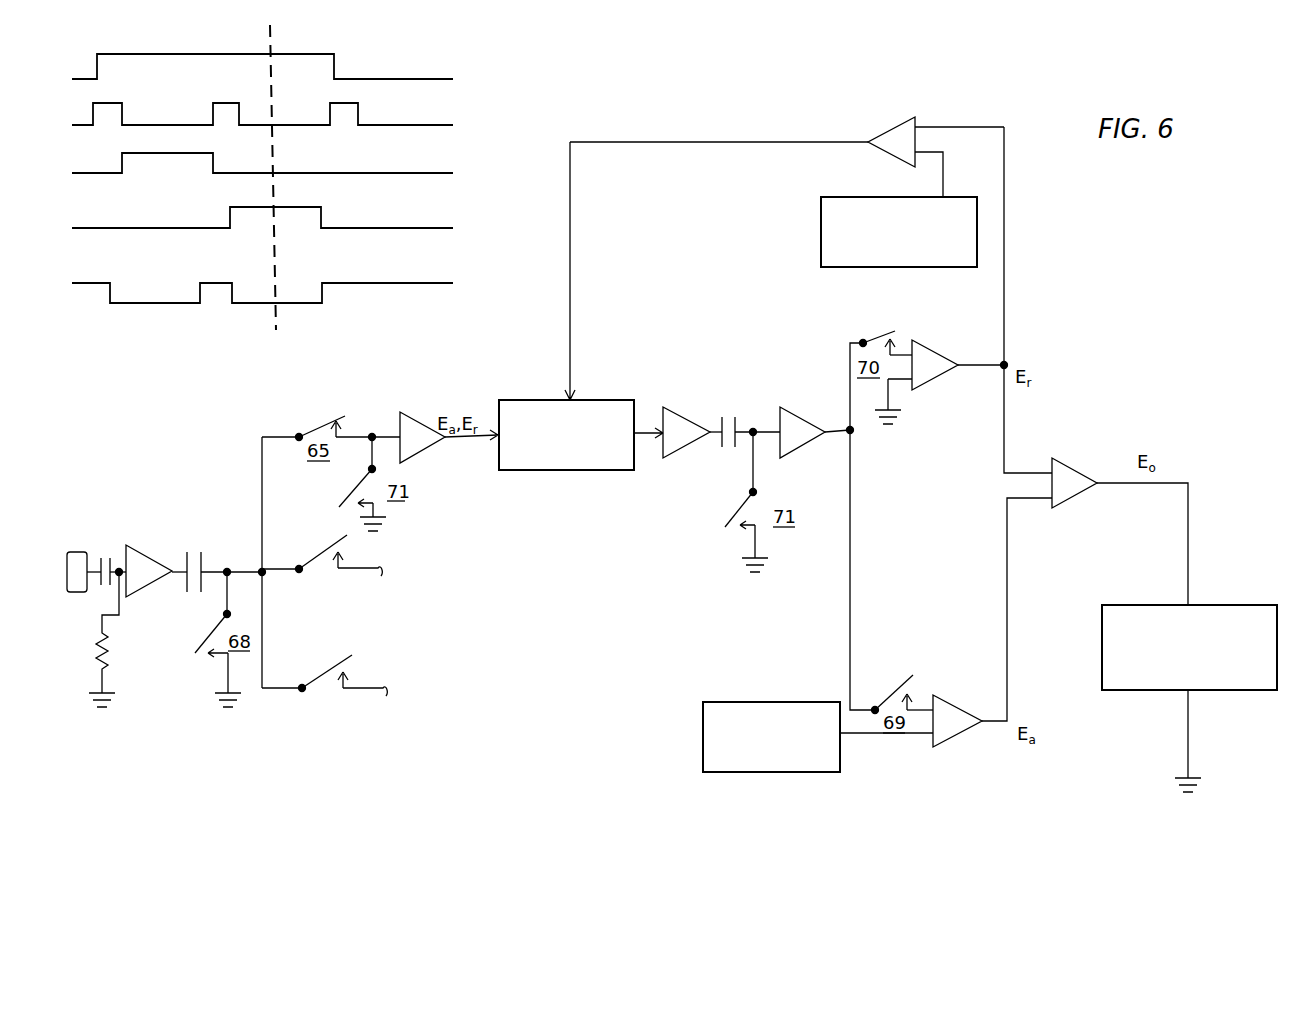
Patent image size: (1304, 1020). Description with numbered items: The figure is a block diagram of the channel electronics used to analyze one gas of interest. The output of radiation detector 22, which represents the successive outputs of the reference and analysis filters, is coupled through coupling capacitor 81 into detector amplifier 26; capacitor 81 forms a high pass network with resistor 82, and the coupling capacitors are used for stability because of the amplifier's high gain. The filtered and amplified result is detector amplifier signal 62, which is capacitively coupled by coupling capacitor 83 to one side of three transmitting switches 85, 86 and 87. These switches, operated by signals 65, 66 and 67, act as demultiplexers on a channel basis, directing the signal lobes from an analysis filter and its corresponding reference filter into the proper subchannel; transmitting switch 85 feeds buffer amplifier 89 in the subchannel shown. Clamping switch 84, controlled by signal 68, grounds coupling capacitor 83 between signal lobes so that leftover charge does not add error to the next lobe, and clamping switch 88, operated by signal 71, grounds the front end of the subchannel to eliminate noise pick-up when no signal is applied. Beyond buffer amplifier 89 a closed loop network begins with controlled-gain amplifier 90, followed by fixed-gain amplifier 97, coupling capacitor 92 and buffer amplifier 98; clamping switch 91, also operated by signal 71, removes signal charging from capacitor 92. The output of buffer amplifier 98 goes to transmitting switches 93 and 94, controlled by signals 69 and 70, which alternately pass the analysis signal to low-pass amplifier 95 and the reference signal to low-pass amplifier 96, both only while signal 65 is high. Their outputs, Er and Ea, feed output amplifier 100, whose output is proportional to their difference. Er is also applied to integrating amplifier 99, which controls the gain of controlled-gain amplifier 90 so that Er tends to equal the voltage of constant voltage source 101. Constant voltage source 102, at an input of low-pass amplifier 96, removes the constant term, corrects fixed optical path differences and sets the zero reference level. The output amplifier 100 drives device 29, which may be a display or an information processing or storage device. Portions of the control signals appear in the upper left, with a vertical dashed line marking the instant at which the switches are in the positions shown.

The radiation detector 22 is at (80, 552).
The coupling capacitor 81 is at (110, 558).
The detector amplifier 26 is at (141, 555).
The detector amplifier signal 62 is at (161, 605).
The coupling capacitor 83 is at (201, 552).
The resistor 82 is at (95, 655).
The clamping switch 84 is at (205, 640).
The transmitting switch 85 is at (322, 424).
The transmitting switch 86 is at (330, 550).
The transmitting switch 87 is at (328, 668).
The clamping switch 88 is at (355, 490).
The buffer amplifier 89 is at (417, 422).
The controlled-gain amplifier 90 is at (604, 400).
The clamping switch 91 is at (733, 513).
The coupling capacitor 92 is at (736, 417).
The transmitting switch 93 is at (870, 341).
The transmitting switch 94 is at (897, 685).
The low-pass amplifier 95 is at (941, 376).
The low-pass amplifier 96 is at (960, 712).
The fixed-gain amplifier 97 is at (681, 420).
The buffer amplifier 98 is at (797, 420).
The integrating amplifier 99 is at (888, 137).
The output amplifier 100 is at (1070, 475).
The constant voltage source 101 is at (850, 267).
The constant voltage source 102 is at (745, 772).
The device 29 is at (1237, 685).
The signal 65 is at (246, 72).
The signal 66 is at (332, 601).
The signal 67 is at (337, 720).
The signal 68 is at (246, 119).
The signal 69 is at (246, 169).
The signal 70 is at (246, 223).
The signal 71 is at (246, 288).